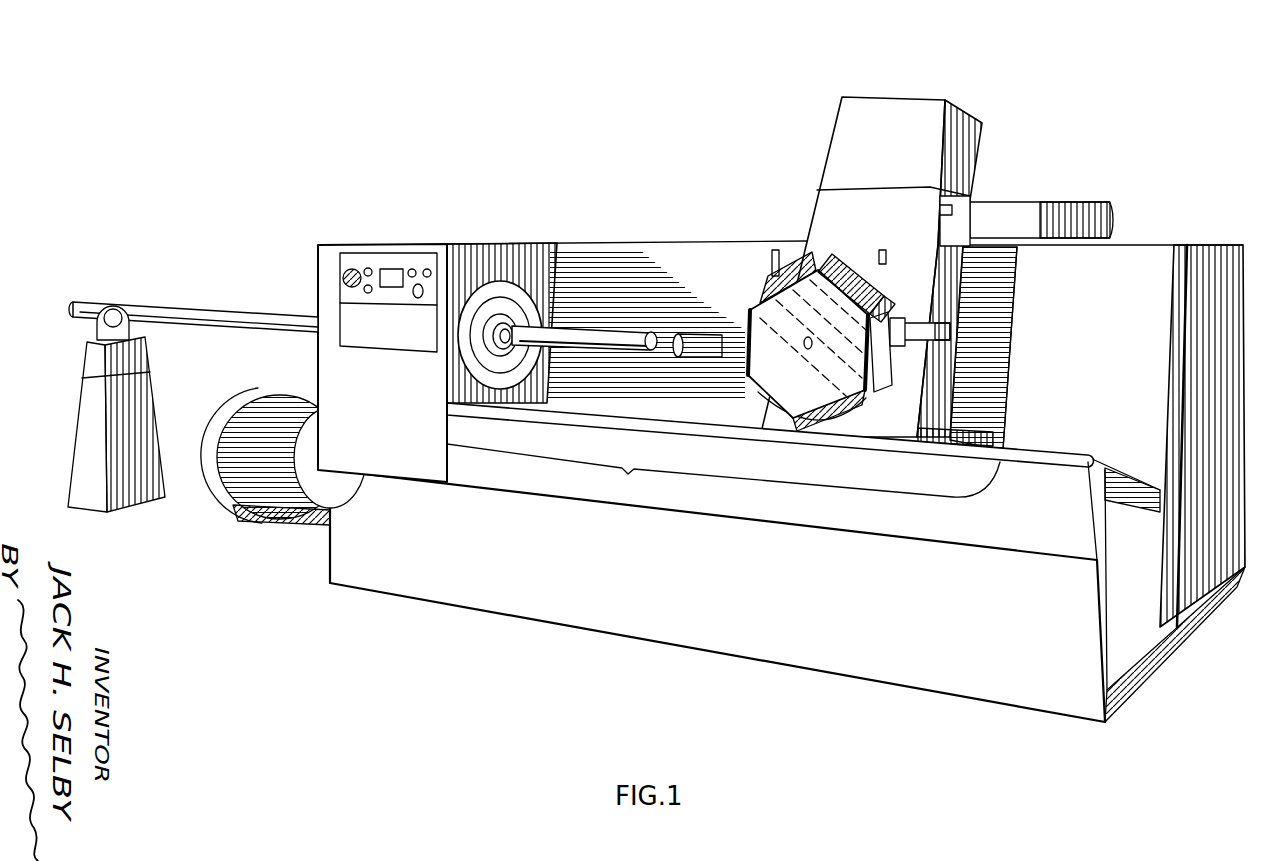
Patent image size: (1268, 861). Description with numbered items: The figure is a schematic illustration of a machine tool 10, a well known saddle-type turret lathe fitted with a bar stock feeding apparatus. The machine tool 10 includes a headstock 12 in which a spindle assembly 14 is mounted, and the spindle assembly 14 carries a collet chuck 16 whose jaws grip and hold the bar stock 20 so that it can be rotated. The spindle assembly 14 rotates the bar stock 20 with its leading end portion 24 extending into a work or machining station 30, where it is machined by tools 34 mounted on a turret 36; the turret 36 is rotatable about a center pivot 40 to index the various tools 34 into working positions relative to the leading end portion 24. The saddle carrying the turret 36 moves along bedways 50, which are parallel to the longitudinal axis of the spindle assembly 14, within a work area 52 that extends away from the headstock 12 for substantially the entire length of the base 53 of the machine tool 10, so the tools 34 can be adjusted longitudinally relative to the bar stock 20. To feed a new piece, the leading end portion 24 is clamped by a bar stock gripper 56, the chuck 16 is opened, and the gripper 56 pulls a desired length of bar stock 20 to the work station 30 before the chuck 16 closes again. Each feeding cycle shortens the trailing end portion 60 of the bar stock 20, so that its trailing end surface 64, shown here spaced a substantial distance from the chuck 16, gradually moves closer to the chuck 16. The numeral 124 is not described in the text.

The machine tool 10 is at (1224, 86).
The headstock 12 is at (461, 237).
The spindle assembly 14 is at (514, 277).
The collet chuck 16 is at (497, 343).
The bar stock 20 is at (276, 306).
The leading end portion 24 is at (580, 330).
The work or machining station 30 is at (645, 358).
The tools 34 is at (807, 265).
The turret 36 is at (751, 295).
The center pivot 40 is at (820, 350).
The bedways 50 is at (698, 315).
The work area 52 is at (708, 459).
The base 53 is at (696, 595).
The bar stock gripper 56 is at (751, 336).
The trailing end portion 60 is at (196, 305).
The trailing end surface 64 is at (74, 310).
The shaft end 124 is at (657, 348).